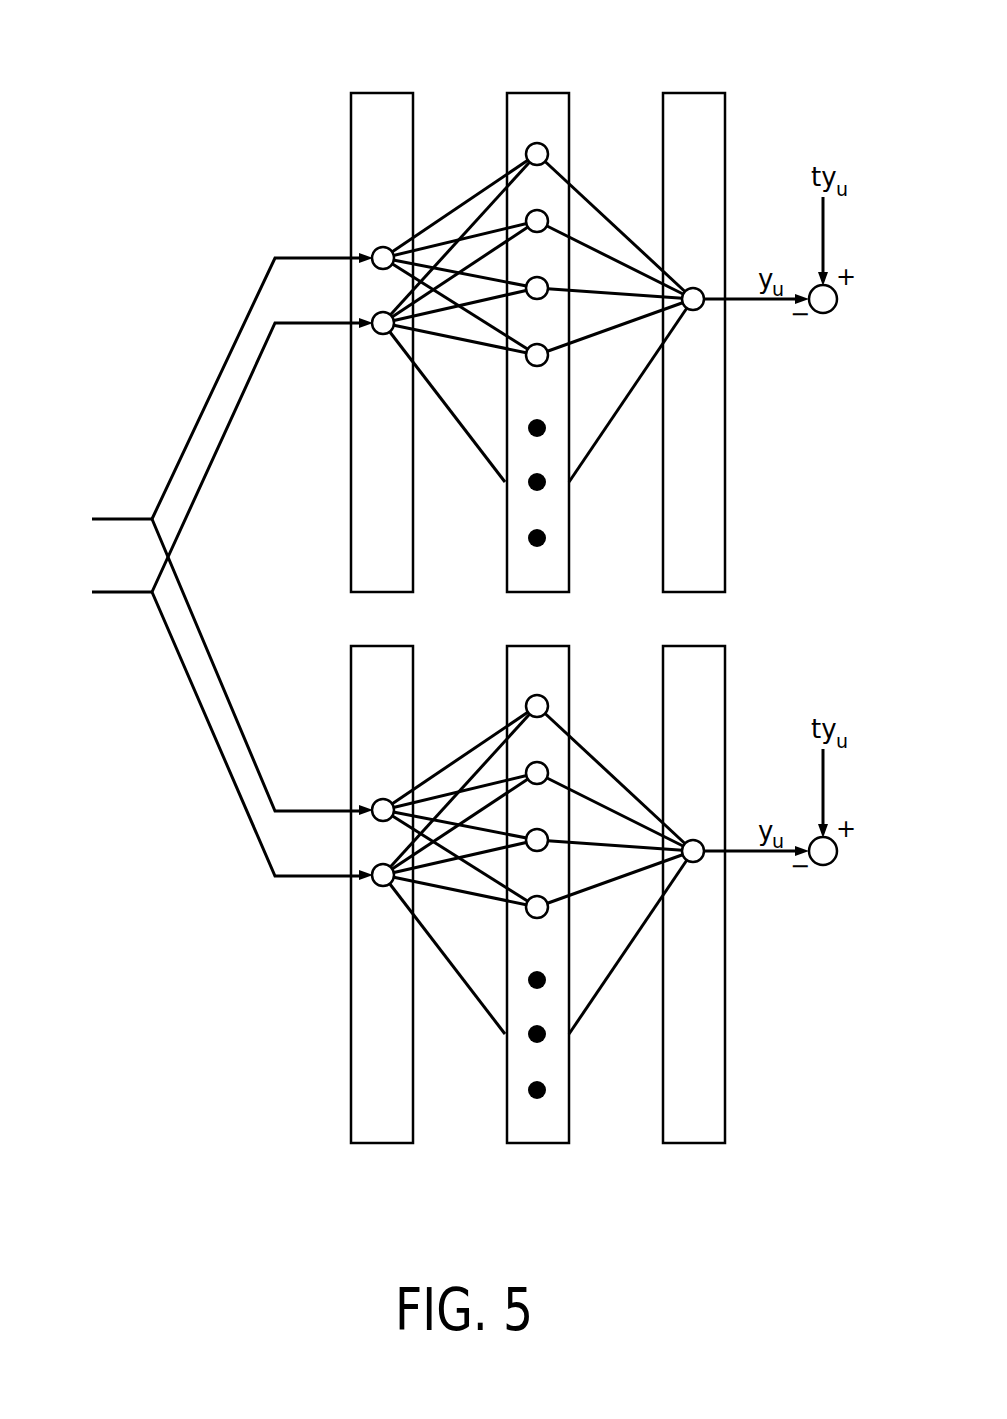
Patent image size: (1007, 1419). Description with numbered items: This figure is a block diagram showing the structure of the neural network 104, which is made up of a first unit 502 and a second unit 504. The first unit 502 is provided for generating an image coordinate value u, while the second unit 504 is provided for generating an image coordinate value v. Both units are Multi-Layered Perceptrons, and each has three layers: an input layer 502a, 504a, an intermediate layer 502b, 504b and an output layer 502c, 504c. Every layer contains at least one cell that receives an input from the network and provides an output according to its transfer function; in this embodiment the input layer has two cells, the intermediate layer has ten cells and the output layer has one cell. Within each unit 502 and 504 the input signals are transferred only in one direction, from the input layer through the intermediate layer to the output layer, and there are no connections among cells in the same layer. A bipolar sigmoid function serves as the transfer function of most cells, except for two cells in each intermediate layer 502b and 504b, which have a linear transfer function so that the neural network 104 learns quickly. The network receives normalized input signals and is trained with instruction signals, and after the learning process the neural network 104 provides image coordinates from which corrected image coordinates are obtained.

The neural network 104 is at (114, 1023).
The first unit 502 is at (290, 195).
The input layer 502a is at (370, 92).
The intermediate layer 502b is at (523, 92).
The output layer 502c is at (678, 92).
The second unit 504 is at (290, 1042).
The input layer 504a is at (368, 1143).
The intermediate layer 504b is at (522, 1143).
The output layer 504c is at (683, 1143).